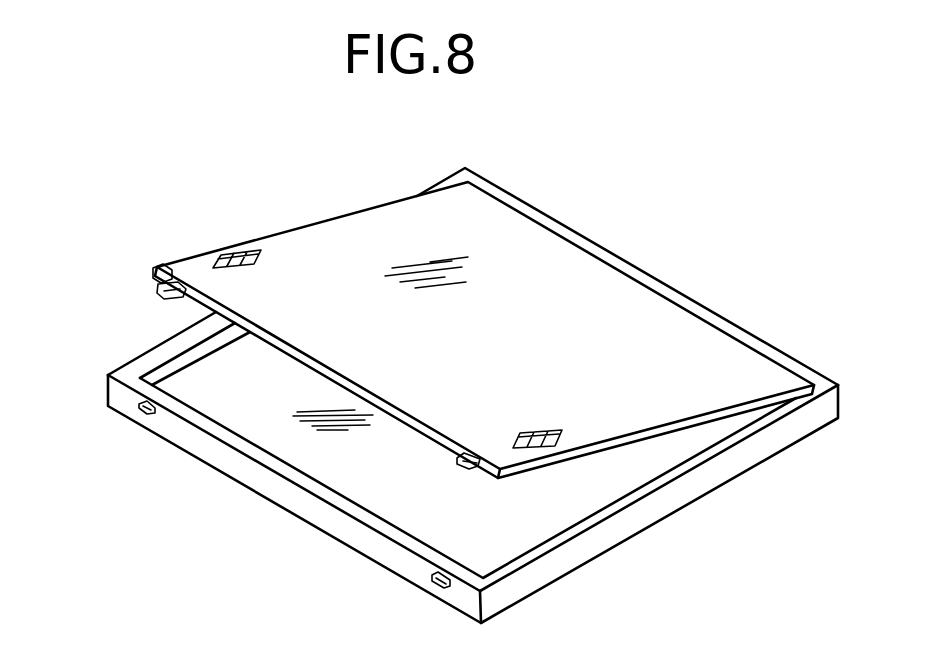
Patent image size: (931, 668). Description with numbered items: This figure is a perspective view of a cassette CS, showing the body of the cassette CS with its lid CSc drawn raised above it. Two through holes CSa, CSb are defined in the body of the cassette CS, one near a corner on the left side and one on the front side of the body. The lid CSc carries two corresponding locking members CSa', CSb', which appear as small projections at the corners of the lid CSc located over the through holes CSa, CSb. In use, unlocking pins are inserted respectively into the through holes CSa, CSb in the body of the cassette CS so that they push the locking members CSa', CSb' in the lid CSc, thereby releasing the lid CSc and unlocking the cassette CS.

The cassette CS is at (505, 170).
The through hole CSa is at (98, 432).
The locking member CSa' is at (141, 246).
The through hole CSb is at (384, 601).
The locking member CSb' is at (521, 404).
The lid CSc is at (637, 296).